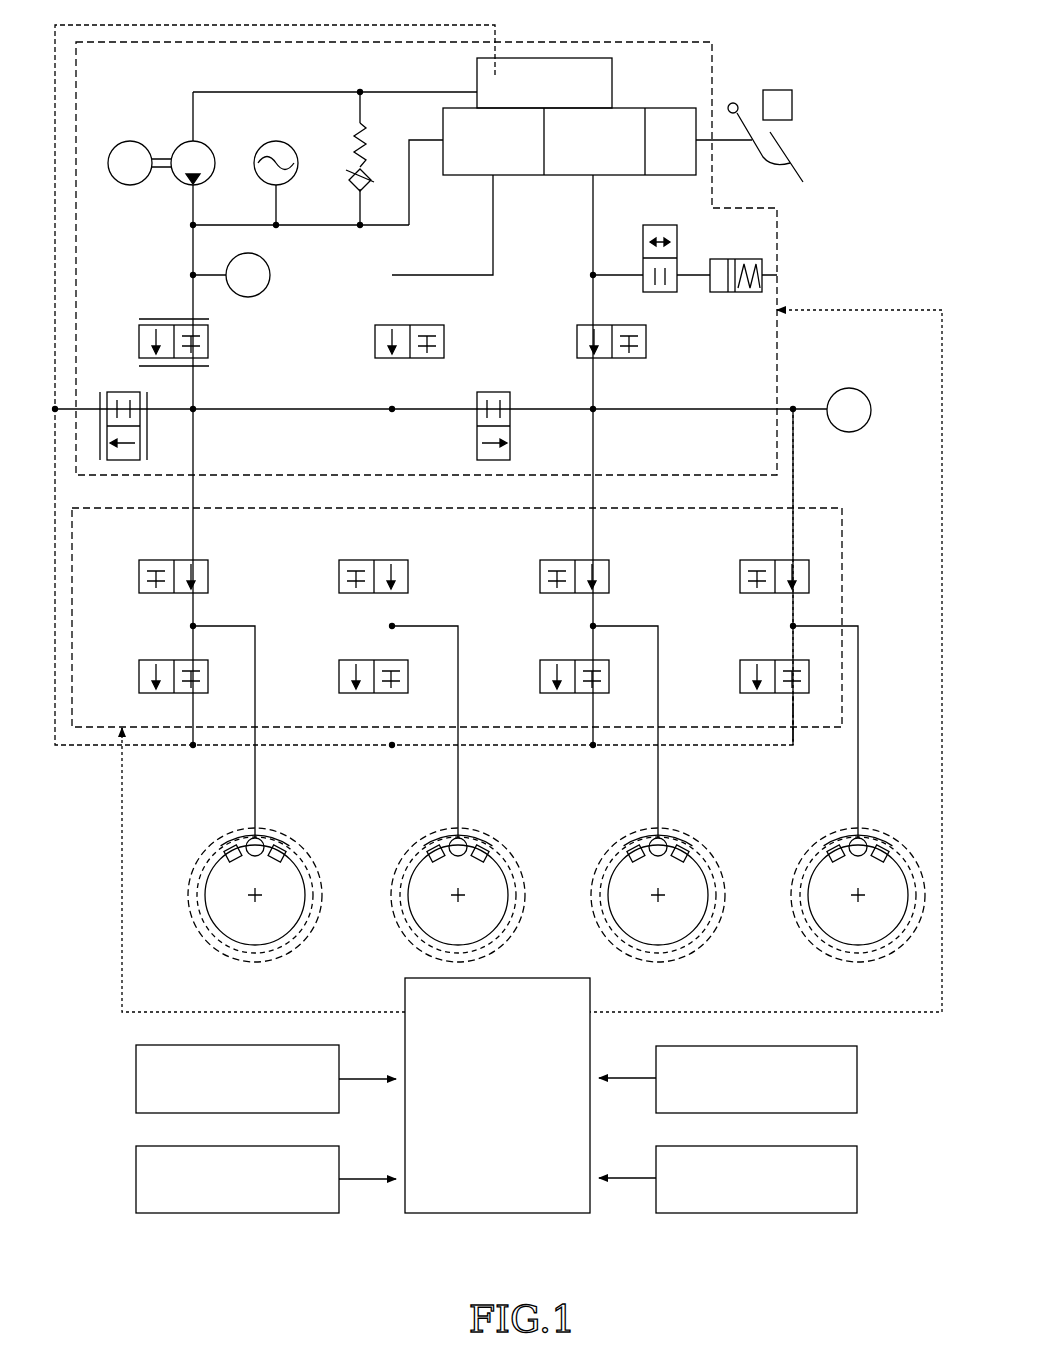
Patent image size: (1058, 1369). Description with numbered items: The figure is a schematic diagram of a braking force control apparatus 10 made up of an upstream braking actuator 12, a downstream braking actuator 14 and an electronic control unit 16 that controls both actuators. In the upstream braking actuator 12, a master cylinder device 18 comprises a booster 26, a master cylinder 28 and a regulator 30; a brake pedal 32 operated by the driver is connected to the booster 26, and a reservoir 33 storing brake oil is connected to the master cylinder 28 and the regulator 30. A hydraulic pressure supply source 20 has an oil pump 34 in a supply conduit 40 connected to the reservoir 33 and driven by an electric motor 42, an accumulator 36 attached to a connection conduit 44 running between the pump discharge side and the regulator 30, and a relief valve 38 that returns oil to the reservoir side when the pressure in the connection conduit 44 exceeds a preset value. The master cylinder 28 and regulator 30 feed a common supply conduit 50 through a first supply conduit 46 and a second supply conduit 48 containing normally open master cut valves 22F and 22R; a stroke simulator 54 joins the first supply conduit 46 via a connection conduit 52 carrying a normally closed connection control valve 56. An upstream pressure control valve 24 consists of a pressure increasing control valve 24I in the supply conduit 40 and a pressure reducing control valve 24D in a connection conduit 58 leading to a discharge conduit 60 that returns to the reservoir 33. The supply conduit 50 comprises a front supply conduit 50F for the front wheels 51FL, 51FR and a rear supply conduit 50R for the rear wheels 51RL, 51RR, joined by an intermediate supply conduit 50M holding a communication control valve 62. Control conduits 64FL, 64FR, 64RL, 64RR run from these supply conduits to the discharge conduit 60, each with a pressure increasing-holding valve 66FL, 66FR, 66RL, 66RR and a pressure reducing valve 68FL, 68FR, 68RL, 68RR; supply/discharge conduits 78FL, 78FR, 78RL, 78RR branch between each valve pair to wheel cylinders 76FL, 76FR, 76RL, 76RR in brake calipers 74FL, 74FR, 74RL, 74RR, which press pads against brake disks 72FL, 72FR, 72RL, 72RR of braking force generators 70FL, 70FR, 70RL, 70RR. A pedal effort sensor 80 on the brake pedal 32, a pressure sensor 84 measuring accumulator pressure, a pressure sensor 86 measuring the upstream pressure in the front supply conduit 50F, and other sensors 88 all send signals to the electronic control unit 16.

The braking force control apparatus 10 is at (783, 60).
The upstream braking actuator 12 is at (565, 40).
The downstream braking actuator 14 is at (825, 508).
The electronic control unit 16 is at (496, 1095).
The master cylinder device 18 is at (460, 103).
The hydraulic pressure supply source 20 is at (183, 90).
The master cut valve 22F is at (577, 340).
The master cut valve 22R is at (372, 340).
The upstream pressure control valve 24 is at (125, 330).
The pressure reducing control valve 24D is at (122, 390).
The pressure increasing control valve 24I is at (210, 345).
The booster 26 is at (670, 141).
The master cylinder 28 is at (593, 141).
The regulator 30 is at (493, 141).
The brake pedal 32 is at (795, 163).
The reservoir 33 is at (612, 78).
The oil pump 34 is at (208, 145).
The accumulator 36 is at (282, 142).
The relief valve 38 is at (352, 182).
The supply conduit 40 is at (258, 92).
The electric motor 42 is at (128, 185).
The connection conduit 44 is at (378, 232).
The first supply conduit 46 is at (592, 250).
The second supply conduit 48 is at (492, 250).
The supply conduit 50 is at (683, 406).
The supply conduit 50F is at (645, 411).
The intermediate supply conduit 50M is at (520, 411).
The supply conduit 50R is at (270, 411).
The right rear wheel 51RR is at (207, 943).
The left rear wheel 51RL is at (410, 943).
The right front wheel 51FR is at (607, 945).
The left front wheel 51FL is at (810, 945).
The connection conduit 52 is at (690, 278).
The stroke simulator 54 is at (765, 277).
The connection control valve 56 is at (645, 243).
The connection conduit 58 is at (172, 411).
The discharge conduit 60 is at (60, 112).
The communication control valve 62 is at (493, 390).
The right rear wheel control conduit 64RR is at (191, 645).
The left rear wheel control conduit 64RL is at (390, 645).
The right front wheel control conduit 64FR is at (591, 645).
The left front wheel control conduit 64FL is at (791, 645).
The pressure increasing-holding valve 66RR is at (137, 578).
The pressure increasing-holding valve 66RL is at (337, 578).
The pressure increasing-holding valve 66FR is at (538, 578).
The pressure increasing-holding valve 66FL is at (738, 578).
The pressure reducing valve 68RR is at (137, 670).
The pressure reducing valve 68RL is at (337, 670).
The pressure reducing valve 68FR is at (538, 670).
The pressure reducing valve 68FL is at (738, 670).
The braking force generator 70RR is at (215, 865).
The braking force generator 70RL is at (418, 865).
The braking force generator 70FR is at (618, 865).
The braking force generator 70FL is at (818, 865).
The brake disk 72RR is at (200, 900).
The brake disk 72RL is at (403, 900).
The brake disk 72FR is at (603, 900).
The brake disk 72FL is at (803, 900).
The brake caliper 74RR is at (275, 845).
The brake caliper 74RL is at (478, 845).
The brake caliper 74FR is at (678, 845).
The brake caliper 74FL is at (878, 845).
The wheel cylinder 76RR is at (245, 842).
The wheel cylinder 76RL is at (448, 842).
The wheel cylinder 76FR is at (648, 842).
The wheel cylinder 76FL is at (848, 842).
The supply/discharge conduit 78RR is at (223, 626).
The supply/discharge conduit 78RL is at (423, 626).
The supply/discharge conduit 78FR is at (623, 626).
The supply/discharge conduit 78FL is at (860, 678).
The pedal effort sensor 80 is at (795, 105).
The pressure sensor 84 is at (270, 275).
The pressure sensor 86 is at (850, 386).
The other sensors 88 is at (136, 1179).